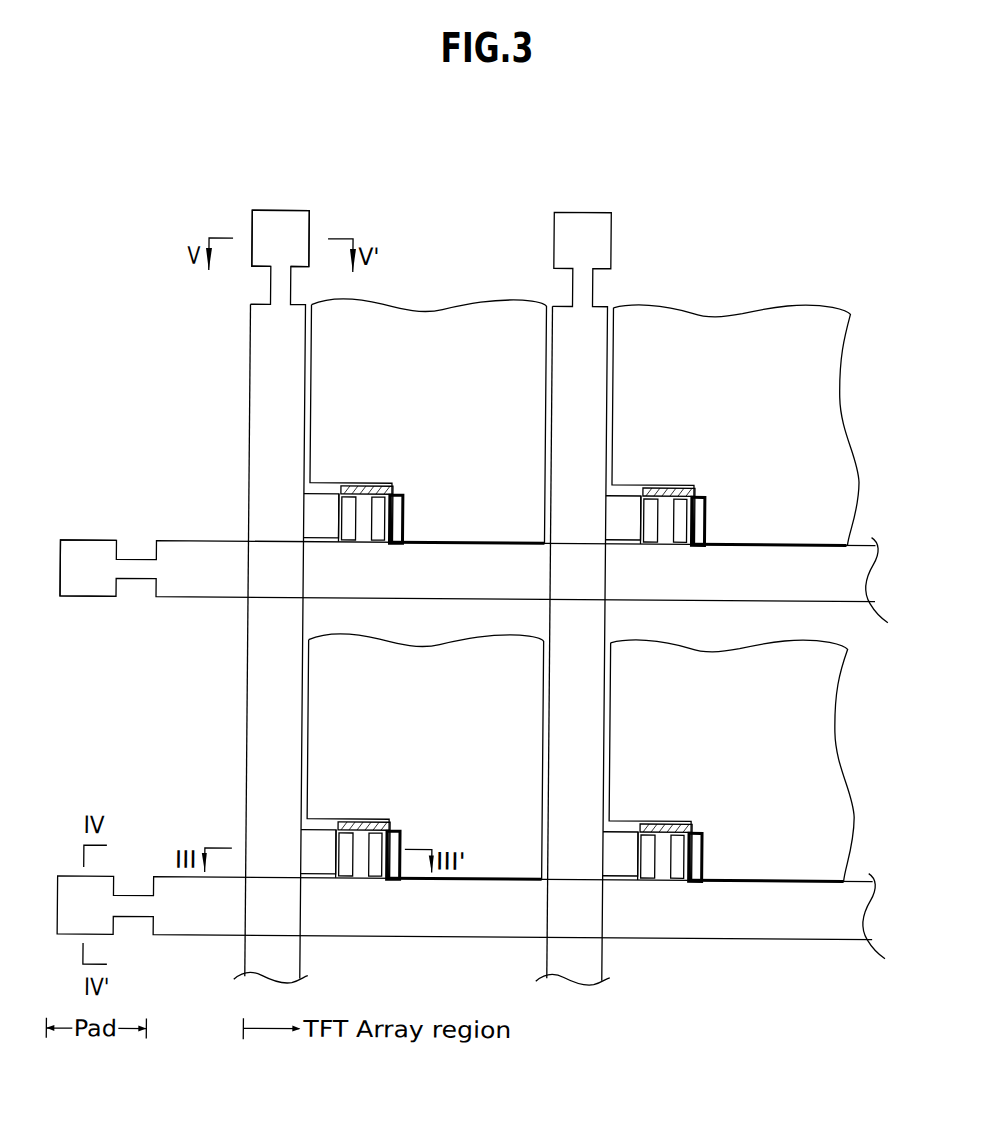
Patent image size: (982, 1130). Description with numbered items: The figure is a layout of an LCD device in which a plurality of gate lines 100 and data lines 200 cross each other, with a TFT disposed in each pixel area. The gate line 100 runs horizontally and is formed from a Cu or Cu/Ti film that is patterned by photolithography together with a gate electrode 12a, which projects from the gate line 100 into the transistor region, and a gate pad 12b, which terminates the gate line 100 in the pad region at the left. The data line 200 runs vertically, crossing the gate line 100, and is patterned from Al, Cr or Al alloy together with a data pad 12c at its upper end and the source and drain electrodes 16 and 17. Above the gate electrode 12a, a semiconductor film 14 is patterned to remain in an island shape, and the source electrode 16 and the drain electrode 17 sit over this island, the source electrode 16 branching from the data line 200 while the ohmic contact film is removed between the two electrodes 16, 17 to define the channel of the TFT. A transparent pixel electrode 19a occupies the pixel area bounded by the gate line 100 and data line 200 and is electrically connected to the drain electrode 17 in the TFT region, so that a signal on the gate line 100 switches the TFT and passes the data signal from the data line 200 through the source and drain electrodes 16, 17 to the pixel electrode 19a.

The gate line 100 is at (206, 551).
The data line 200 is at (262, 379).
The gate electrode 12a is at (361, 486).
The gate pad 12b is at (97, 556).
The data pad 12c is at (278, 228).
The semiconductor film 14 is at (404, 508).
The source electrode 16 is at (356, 505).
The drain electrode 17 is at (405, 531).
The pixel electrode 19a is at (464, 305).
The thin film transistor TFT is at (399, 485).